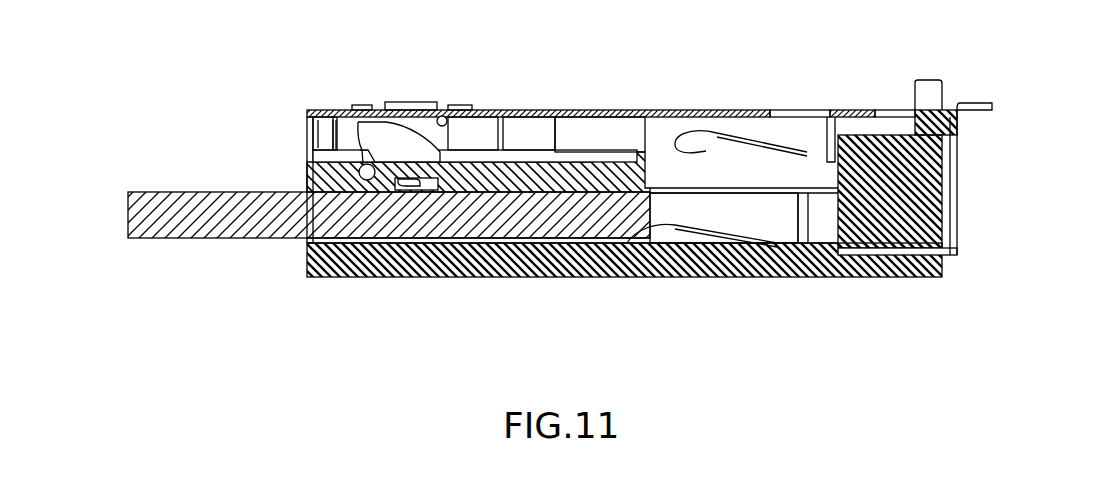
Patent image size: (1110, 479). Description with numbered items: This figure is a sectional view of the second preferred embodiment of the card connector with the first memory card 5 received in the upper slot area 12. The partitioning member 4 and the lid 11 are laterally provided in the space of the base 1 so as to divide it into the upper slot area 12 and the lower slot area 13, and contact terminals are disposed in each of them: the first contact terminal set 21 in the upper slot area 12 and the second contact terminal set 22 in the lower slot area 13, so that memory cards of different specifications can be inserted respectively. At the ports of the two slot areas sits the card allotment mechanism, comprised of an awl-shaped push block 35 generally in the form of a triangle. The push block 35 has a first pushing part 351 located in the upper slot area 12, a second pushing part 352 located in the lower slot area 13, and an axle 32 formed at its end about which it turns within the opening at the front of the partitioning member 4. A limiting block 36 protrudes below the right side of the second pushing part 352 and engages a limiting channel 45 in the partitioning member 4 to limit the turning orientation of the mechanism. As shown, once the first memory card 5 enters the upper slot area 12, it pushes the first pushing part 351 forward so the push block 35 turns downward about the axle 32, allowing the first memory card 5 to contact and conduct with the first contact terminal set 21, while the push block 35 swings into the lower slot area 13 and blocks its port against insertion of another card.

The base 1 is at (893, 277).
The lid 11 is at (558, 116).
The upper slot area 12 is at (728, 212).
The lower slot area 13 is at (597, 133).
The first contact terminal set 21 is at (690, 245).
The second contact terminal set 22 is at (722, 132).
The axle 32 is at (337, 116).
The push block 35 is at (400, 118).
The first pushing part 351 is at (334, 150).
The second pushing part 352 is at (405, 183).
The limiting block 36 is at (418, 188).
The partitioning member 4 is at (498, 117).
The limiting channel 45 is at (430, 116).
The first memory card 5 is at (211, 200).